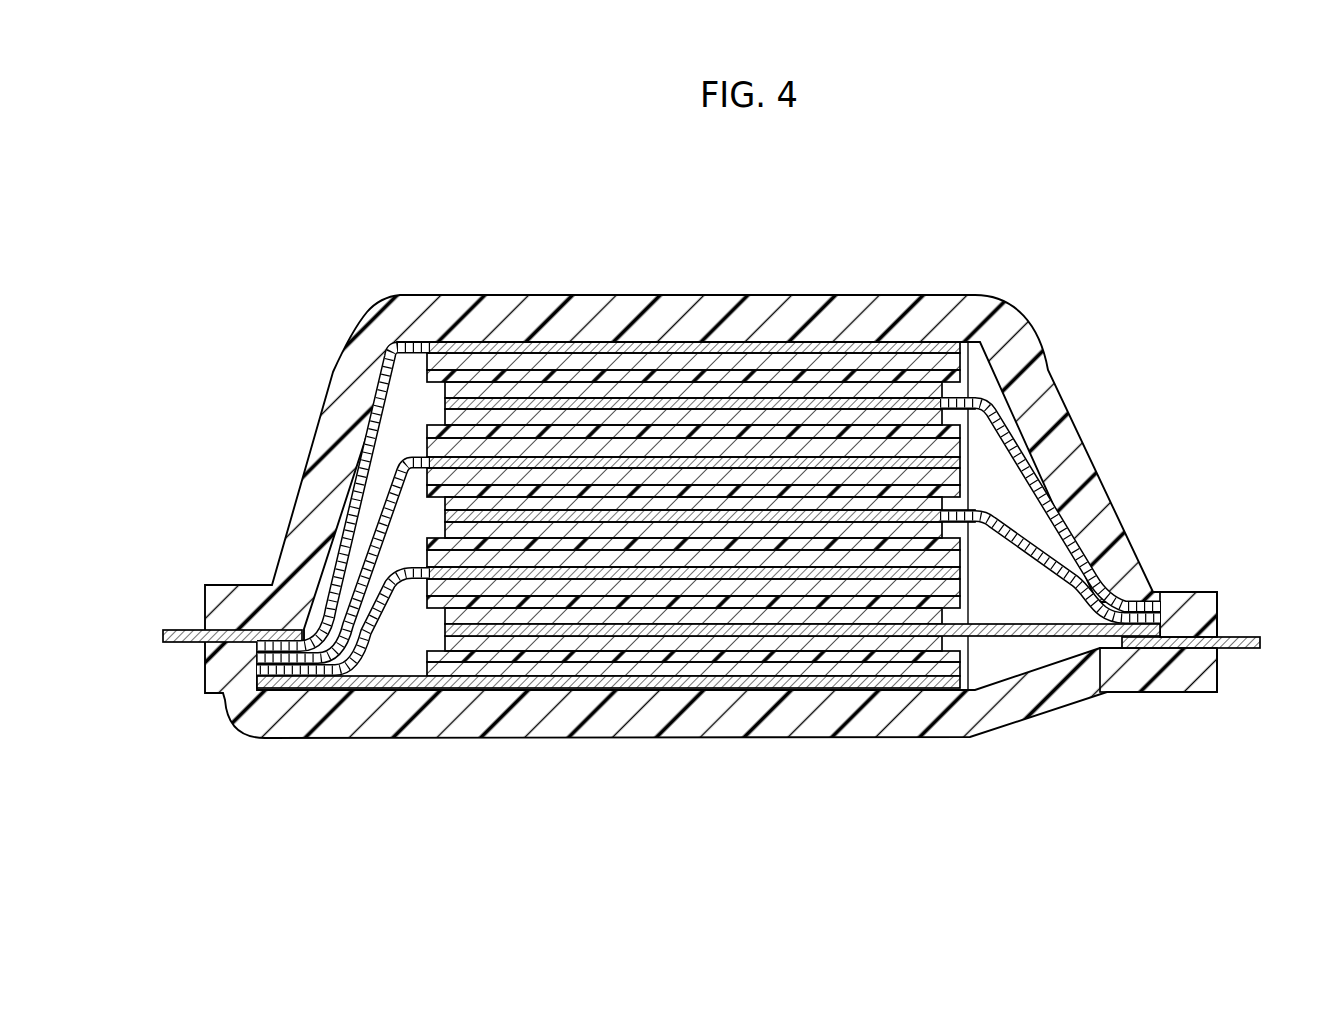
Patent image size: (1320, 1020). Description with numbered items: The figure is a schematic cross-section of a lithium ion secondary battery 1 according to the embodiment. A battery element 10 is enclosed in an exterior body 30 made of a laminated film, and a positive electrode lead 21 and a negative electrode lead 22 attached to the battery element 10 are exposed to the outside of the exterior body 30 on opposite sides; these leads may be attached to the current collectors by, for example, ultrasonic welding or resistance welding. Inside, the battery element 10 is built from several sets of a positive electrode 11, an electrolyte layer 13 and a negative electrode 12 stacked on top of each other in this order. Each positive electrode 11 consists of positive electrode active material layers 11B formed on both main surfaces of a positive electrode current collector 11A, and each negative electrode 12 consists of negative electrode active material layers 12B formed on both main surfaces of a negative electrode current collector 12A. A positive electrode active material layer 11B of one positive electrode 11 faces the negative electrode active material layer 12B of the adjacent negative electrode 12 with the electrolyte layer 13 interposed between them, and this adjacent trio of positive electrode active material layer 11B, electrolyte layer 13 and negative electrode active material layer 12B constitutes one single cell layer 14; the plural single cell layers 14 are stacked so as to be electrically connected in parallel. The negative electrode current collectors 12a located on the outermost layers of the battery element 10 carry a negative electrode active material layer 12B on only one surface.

The lithium ion secondary battery 1 is at (302, 273).
The battery element 10 is at (967, 561).
The positive electrode 11 is at (802, 415).
The positive electrode current collector 11A is at (704, 400).
The positive electrode active material layer 11B is at (592, 390).
The negative electrode 12 is at (562, 501).
The negative electrode current collector 12A is at (865, 460).
The negative electrode active material layer 12B is at (490, 363).
The negative electrode current collector 12a is at (382, 446).
The electrolyte layer 13 is at (545, 377).
The single cell layer 14 is at (693, 421).
The positive electrode lead 21 is at (1233, 634).
The negative electrode lead 22 is at (187, 627).
The exterior body 30 is at (1195, 591).